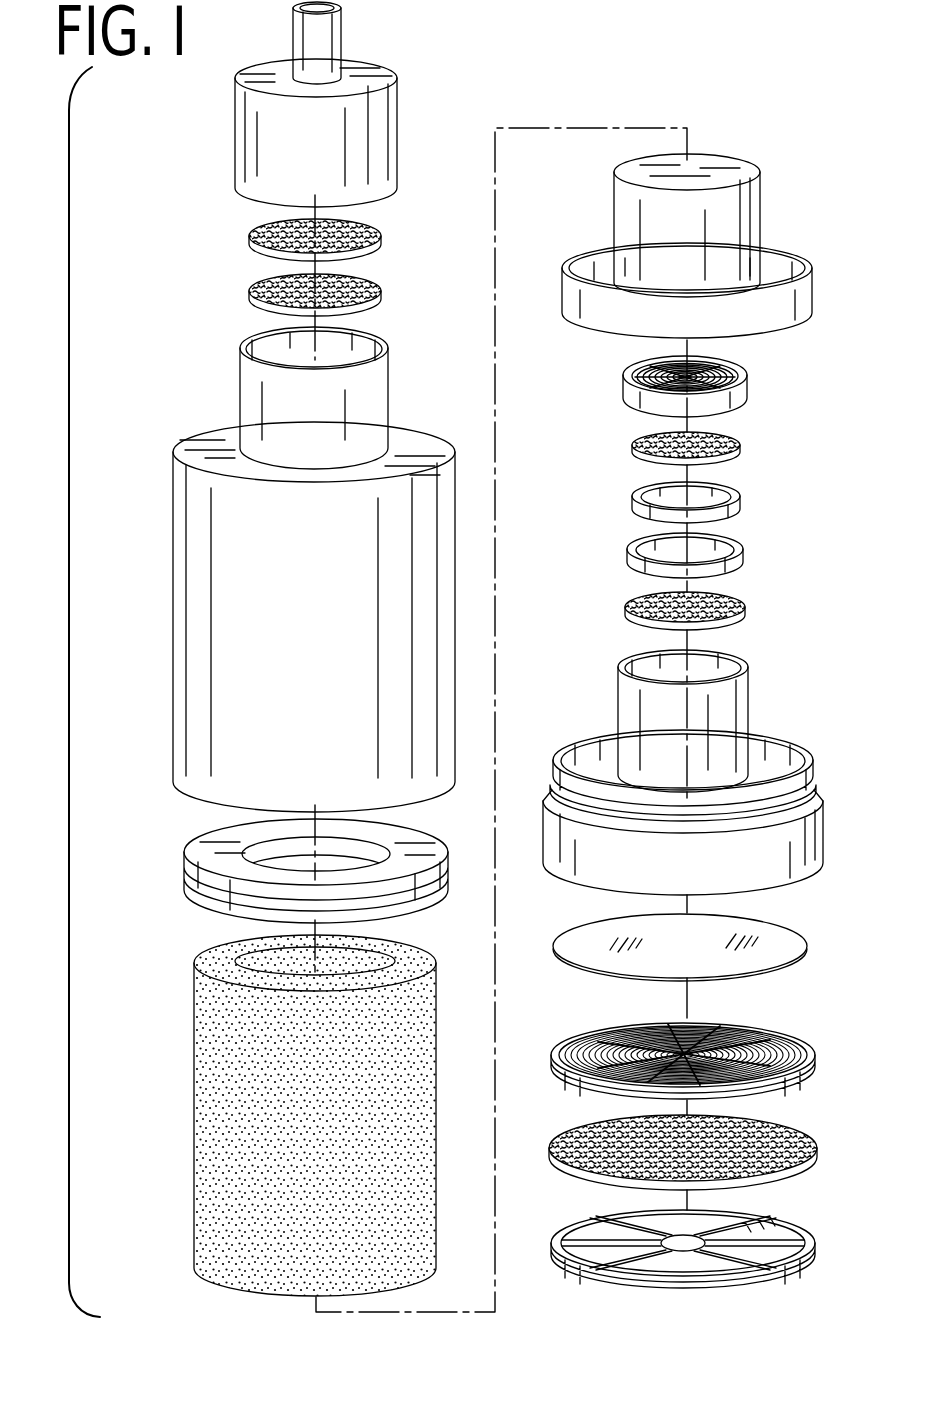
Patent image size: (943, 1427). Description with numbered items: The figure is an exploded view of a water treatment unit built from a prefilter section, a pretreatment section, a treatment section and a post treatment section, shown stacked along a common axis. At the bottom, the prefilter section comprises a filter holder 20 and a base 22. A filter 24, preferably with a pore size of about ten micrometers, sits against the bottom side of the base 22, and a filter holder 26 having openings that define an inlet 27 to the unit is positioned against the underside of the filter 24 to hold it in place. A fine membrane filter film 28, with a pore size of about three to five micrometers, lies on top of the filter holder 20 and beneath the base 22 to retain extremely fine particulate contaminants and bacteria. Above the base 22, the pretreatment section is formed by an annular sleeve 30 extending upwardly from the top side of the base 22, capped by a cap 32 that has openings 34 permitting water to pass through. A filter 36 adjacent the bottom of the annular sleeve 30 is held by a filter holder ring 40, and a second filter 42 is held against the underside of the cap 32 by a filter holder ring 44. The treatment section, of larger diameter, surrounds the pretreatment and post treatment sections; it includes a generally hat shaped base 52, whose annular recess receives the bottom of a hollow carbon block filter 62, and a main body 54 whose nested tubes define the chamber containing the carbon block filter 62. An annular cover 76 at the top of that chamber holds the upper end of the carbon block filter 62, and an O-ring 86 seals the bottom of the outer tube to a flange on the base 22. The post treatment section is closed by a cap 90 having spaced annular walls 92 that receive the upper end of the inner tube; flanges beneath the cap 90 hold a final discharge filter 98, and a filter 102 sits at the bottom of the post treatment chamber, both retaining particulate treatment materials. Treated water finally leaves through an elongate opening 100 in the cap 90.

The elongate opening 100 is at (342, 36).
The cap 90 is at (240, 93).
The annular wall 92 is at (242, 136).
The final discharge filter 98 is at (366, 226).
The filter 102 is at (368, 281).
The main body 54 is at (176, 585).
The annular cover 76 is at (186, 863).
The hollow carbon block filter 62 is at (192, 990).
The hat shaped base 52 is at (614, 200).
The cap 32 is at (628, 396).
The openings 34 is at (744, 370).
The second filter 42 is at (632, 450).
The filter holder ring 44 is at (632, 500).
The filter holder ring 40 is at (628, 565).
The filter 36 is at (628, 612).
The annular sleeve 30 is at (625, 700).
The O-ring 86 is at (671, 808).
The base 22 is at (580, 856).
The fine membrane filter film 28 is at (592, 968).
The filter holder 20 is at (586, 1080).
The filter 24 is at (590, 1175).
The inlet 27 is at (745, 1232).
The filter holder 26 is at (573, 1268).